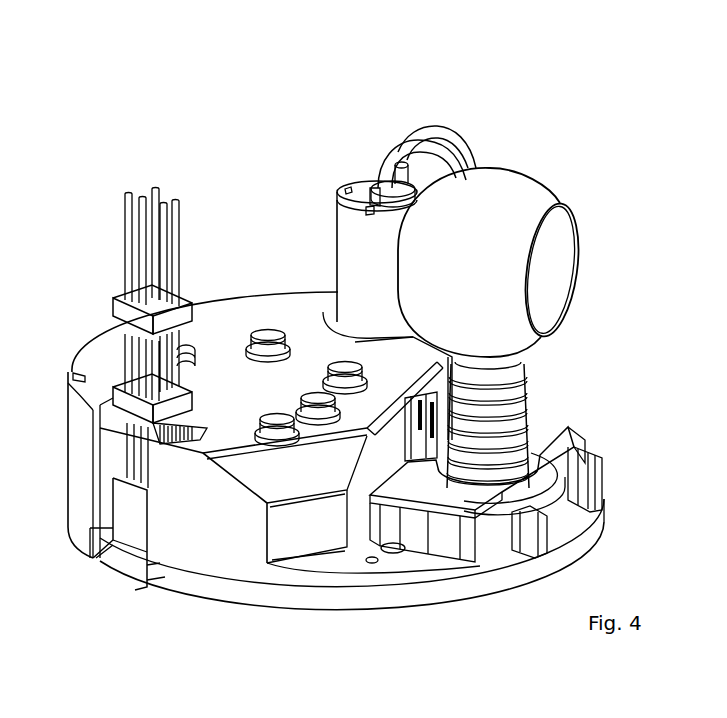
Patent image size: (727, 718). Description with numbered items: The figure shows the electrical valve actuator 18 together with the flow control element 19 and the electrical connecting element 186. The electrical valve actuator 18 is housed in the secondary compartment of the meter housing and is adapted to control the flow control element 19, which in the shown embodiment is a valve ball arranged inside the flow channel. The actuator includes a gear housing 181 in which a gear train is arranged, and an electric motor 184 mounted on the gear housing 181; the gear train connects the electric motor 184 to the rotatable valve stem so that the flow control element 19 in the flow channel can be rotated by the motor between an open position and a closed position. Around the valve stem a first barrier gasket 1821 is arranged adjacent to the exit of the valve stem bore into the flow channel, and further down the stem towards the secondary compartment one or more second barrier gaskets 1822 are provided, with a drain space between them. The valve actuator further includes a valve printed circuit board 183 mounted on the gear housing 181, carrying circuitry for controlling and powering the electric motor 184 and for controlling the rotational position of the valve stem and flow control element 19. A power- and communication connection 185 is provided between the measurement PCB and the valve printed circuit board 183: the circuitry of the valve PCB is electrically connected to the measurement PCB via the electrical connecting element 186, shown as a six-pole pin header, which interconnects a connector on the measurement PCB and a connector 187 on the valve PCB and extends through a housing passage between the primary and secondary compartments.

The electrical valve actuator 18 is at (118, 84).
The flow control element 19 is at (502, 187).
The gear housing 181 is at (203, 547).
The valve printed circuit board 183 is at (273, 597).
The electric motor 184 is at (350, 186).
The power- and communication connection 185 is at (137, 348).
The electrical connecting element 186 is at (158, 232).
The connector 187 is at (130, 528).
The first barrier gasket 1821 is at (520, 355).
The second barrier gasket 1822 is at (530, 418).